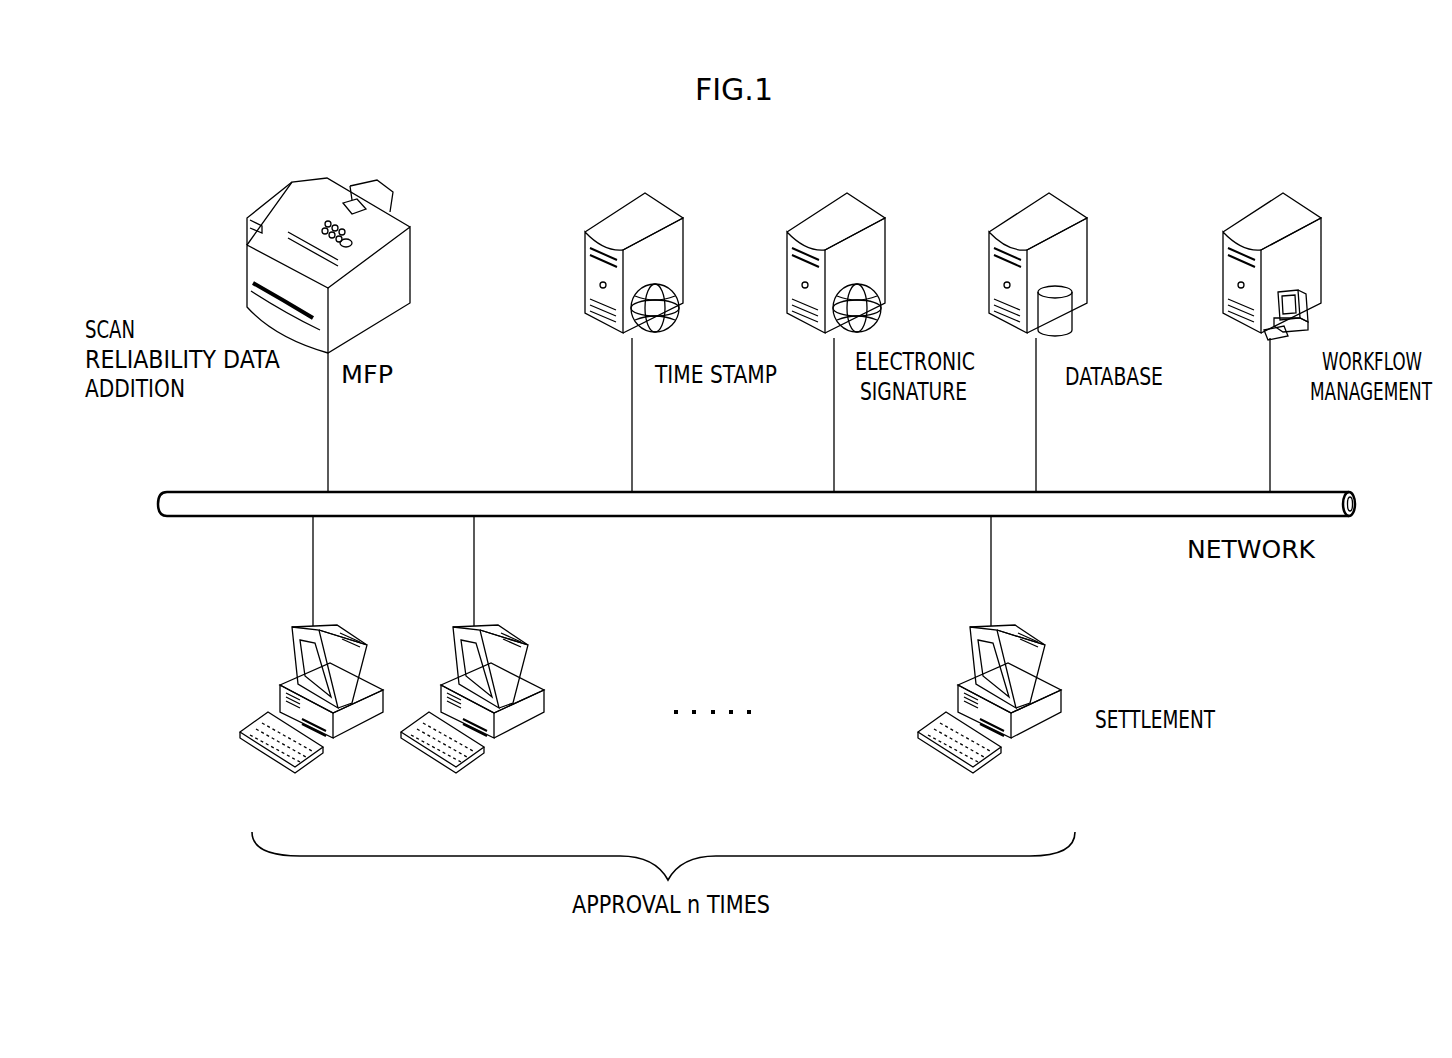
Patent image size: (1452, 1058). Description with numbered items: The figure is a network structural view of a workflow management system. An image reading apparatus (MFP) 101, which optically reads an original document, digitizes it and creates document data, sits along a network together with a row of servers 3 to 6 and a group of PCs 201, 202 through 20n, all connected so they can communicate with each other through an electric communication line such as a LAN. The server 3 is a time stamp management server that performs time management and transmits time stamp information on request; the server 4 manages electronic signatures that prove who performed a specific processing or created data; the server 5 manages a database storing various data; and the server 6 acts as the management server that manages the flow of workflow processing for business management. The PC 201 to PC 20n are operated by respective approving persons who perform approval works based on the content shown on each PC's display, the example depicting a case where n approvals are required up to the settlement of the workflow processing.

The image reading apparatus (MFP) 101 is at (398, 274).
The server 3 is at (683, 238).
The server 4 is at (855, 327).
The server 5 is at (1057, 327).
The server 6 is at (1291, 327).
The PC 201 is at (372, 722).
The PC 202 is at (489, 664).
The PC 20n is at (1005, 664).